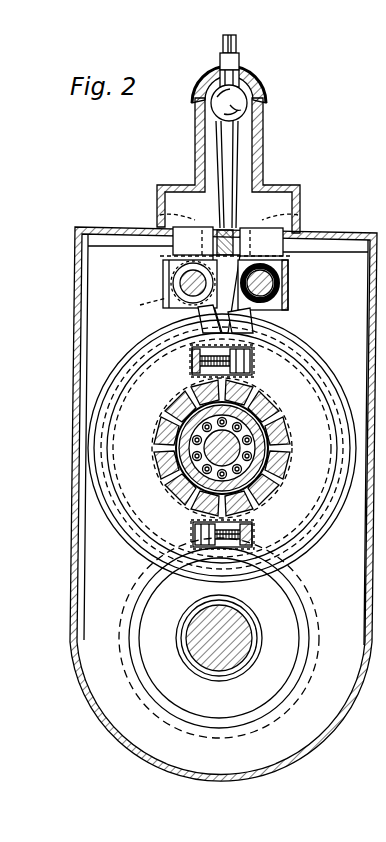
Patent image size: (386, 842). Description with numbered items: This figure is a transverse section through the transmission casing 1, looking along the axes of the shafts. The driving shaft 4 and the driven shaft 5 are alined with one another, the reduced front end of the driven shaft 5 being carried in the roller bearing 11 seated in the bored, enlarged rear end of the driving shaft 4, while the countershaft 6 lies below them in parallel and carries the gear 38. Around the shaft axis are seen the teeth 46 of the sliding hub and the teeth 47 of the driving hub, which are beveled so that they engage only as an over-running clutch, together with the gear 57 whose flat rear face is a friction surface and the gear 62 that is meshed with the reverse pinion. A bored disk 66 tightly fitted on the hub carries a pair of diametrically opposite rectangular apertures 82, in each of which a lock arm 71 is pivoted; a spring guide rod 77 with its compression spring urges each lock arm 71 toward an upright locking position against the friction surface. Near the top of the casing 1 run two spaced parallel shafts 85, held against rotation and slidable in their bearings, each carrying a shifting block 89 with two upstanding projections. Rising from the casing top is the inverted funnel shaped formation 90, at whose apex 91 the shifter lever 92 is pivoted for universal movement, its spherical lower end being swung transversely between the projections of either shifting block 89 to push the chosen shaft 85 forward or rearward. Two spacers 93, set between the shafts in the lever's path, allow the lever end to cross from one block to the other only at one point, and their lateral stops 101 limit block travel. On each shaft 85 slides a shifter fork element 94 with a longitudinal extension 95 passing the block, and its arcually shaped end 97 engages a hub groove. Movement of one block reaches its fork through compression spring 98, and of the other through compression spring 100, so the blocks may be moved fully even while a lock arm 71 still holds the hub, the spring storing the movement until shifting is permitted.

The transmission casing 1 is at (74, 350).
The driving shaft 4 is at (268, 508).
The driven shaft 5 is at (283, 410).
The countershaft 6 is at (185, 639).
The roller bearing 11 is at (280, 456).
The gear 38 is at (318, 600).
The teeth 46 is at (160, 437).
The teeth 47 is at (165, 462).
The gear 57 is at (105, 470).
The gear 62 is at (97, 406).
The bored disk 66 is at (140, 527).
The lock arm 71 is at (250, 361).
The spring guide rod 77 is at (193, 372).
The rectangular aperture 82 is at (193, 353).
The shaft 85 is at (190, 305).
The shifting block 89 is at (320, 233).
The inverted funnel shaped formation 90 is at (195, 146).
The apex 91 is at (262, 114).
The shifter lever 92 is at (240, 48).
The spacer 93 is at (238, 230).
The shifter fork element 94 is at (180, 340).
The longitudinal extension 95 is at (163, 285).
The arcually shaped end 97 is at (165, 412).
The compression spring 98 is at (135, 309).
The compression spring 100 is at (290, 297).
The stop 101 is at (160, 215).